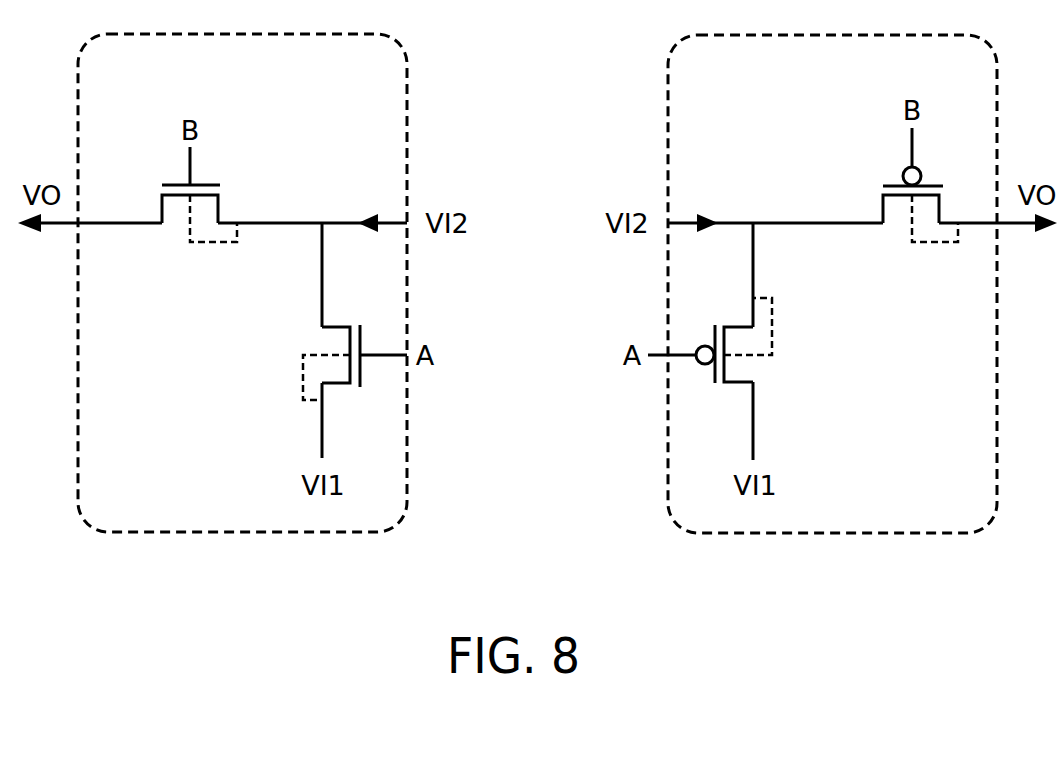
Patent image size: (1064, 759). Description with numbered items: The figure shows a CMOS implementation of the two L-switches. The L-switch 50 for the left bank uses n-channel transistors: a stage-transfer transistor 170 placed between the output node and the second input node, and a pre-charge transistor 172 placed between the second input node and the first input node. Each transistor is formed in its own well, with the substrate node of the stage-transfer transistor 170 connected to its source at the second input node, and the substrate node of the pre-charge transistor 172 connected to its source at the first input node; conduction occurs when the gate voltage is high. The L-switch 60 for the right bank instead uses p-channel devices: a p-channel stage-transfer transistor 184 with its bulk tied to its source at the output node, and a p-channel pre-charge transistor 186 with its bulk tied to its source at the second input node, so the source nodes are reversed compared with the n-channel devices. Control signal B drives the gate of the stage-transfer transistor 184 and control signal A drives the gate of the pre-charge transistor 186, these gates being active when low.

The L-switch 50 is at (207, 398).
The L-switch 60 is at (947, 465).
The stage-transfer transistor 170 is at (162, 224).
The pre-charge transistor 172 is at (322, 327).
The p-channel stage-transfer transistor 184 is at (883, 224).
The p-channel pre-charge transistor 186 is at (753, 382).